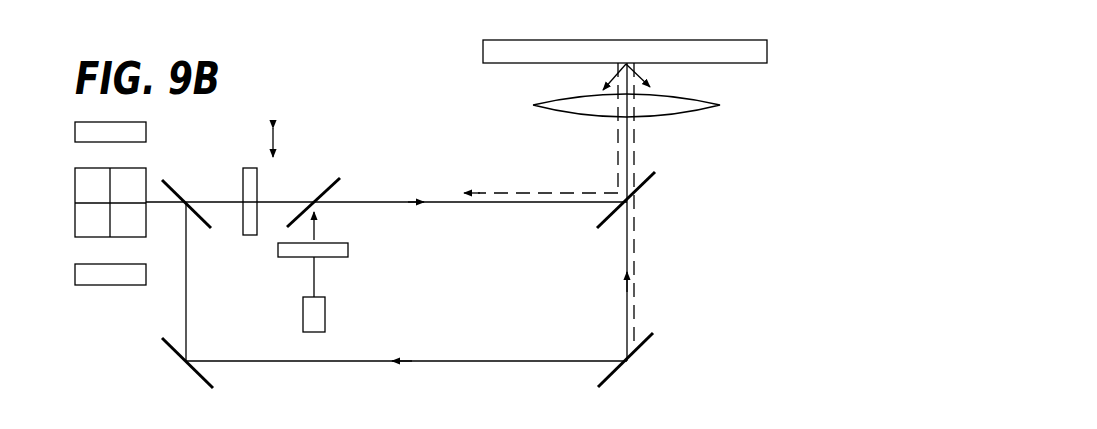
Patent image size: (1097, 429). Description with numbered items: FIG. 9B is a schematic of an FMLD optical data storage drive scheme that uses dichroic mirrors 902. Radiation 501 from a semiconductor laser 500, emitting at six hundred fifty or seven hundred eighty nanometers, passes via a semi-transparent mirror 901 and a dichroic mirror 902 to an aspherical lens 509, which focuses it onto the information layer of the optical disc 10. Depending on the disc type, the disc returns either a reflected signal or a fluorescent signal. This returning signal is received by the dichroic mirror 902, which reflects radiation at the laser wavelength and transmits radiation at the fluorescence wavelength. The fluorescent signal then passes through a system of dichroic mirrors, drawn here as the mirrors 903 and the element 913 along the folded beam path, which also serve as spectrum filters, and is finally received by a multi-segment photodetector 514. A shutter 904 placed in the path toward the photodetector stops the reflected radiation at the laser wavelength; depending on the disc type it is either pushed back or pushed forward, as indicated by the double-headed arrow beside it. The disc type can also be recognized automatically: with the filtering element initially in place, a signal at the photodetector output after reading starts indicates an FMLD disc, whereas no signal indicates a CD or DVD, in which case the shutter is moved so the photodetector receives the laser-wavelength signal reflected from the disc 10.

The optical disc 10 is at (449, 47).
The aspherical lens 509 is at (707, 102).
The dichroic mirror 902 is at (643, 182).
The multi-segment photodetector 514 is at (75, 192).
The beam splitter 913 is at (167, 182).
The shutter 904 is at (243, 168).
The semi-transparent mirror 901 is at (337, 165).
The radiation 501 is at (315, 280).
The semiconductor laser 500 is at (325, 312).
The interference filter 903 is at (162, 339).